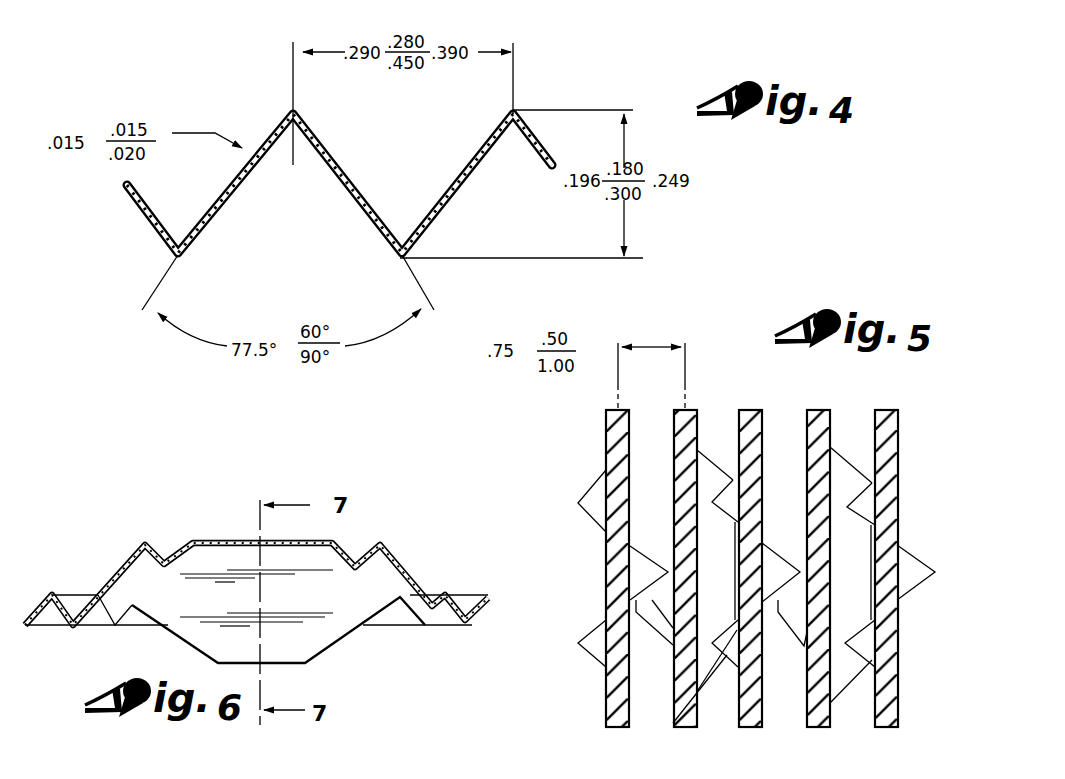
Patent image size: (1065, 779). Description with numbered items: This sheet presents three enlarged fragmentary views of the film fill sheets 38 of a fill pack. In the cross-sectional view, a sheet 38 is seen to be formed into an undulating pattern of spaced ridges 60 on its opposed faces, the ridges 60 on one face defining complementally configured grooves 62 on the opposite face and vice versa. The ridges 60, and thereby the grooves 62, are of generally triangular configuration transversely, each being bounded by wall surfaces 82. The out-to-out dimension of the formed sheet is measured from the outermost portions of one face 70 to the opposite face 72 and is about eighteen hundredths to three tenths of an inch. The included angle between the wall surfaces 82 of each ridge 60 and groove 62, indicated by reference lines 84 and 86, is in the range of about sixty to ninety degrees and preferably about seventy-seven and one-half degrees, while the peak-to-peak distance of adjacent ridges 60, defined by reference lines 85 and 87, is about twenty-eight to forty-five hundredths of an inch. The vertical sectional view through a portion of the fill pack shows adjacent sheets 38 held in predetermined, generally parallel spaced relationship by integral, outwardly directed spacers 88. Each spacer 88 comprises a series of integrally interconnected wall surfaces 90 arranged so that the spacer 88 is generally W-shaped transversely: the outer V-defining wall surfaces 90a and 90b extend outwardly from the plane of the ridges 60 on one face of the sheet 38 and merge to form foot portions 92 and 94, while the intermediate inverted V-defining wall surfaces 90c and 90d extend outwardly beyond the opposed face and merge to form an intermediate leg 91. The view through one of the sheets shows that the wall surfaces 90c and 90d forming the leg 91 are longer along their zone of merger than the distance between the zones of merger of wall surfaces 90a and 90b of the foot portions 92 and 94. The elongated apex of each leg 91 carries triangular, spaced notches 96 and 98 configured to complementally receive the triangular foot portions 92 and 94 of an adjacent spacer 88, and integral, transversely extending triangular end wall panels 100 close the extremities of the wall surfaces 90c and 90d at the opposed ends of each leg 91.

In FIG. 4, the film fill sheet 38 is at (126, 213).
In FIG. 5, the film fill sheet 38 is at (746, 404).
In FIG. 6, the film fill sheet 38 is at (494, 588).
In FIG. 4, the ridge 60 is at (290, 109).
In FIG. 6, the ridge 60 is at (52, 592).
In FIG. 4, the groove 62 is at (178, 246).
In FIG. 6, the groove 62 is at (75, 598).
In FIG. 4, the face 70 is at (607, 108).
In FIG. 5, the face 70 is at (606, 436).
In FIG. 4, the opposite face 72 is at (590, 260).
In FIG. 5, the opposite face 72 is at (632, 455).
In FIG. 4, the wall surface 82 is at (229, 207).
In FIG. 4, the reference line 84 is at (161, 282).
In FIG. 4, the reference line 85 is at (293, 42).
In FIG. 4, the reference line 86 is at (432, 295).
In FIG. 4, the reference line 87 is at (513, 46).
In FIG. 5, the spacer 88 is at (912, 529).
In FIG. 6, the spacer 88 is at (396, 544).
In FIG. 6, the wall surface 90 is at (233, 555).
In FIG. 5, the outer V-defining wall surface 90a is at (598, 493).
In FIG. 5, the outer V-defining wall surface 90b is at (598, 513).
In FIG. 6, the outer V-defining wall surface 90b is at (226, 651).
In FIG. 5, the intermediate inverted V-defining wall surface 90c is at (652, 546).
In FIG. 5, the intermediate inverted V-defining wall surface 90d is at (648, 603).
In FIG. 6, the intermediate inverted V-defining wall surface 90d is at (185, 602).
In FIG. 5, the intermediate leg 91 is at (656, 545).
In FIG. 6, the intermediate leg 91 is at (219, 537).
In FIG. 5, the foot portion 92 is at (576, 501).
In FIG. 5, the foot portion 94 is at (576, 658).
In FIG. 6, the foot portion 94 is at (318, 662).
In FIG. 6, the notch 96 is at (159, 548).
In FIG. 6, the notch 98 is at (356, 560).
In FIG. 5, the end wall panel 100 is at (636, 573).
In FIG. 6, the end wall panel 100 is at (96, 592).